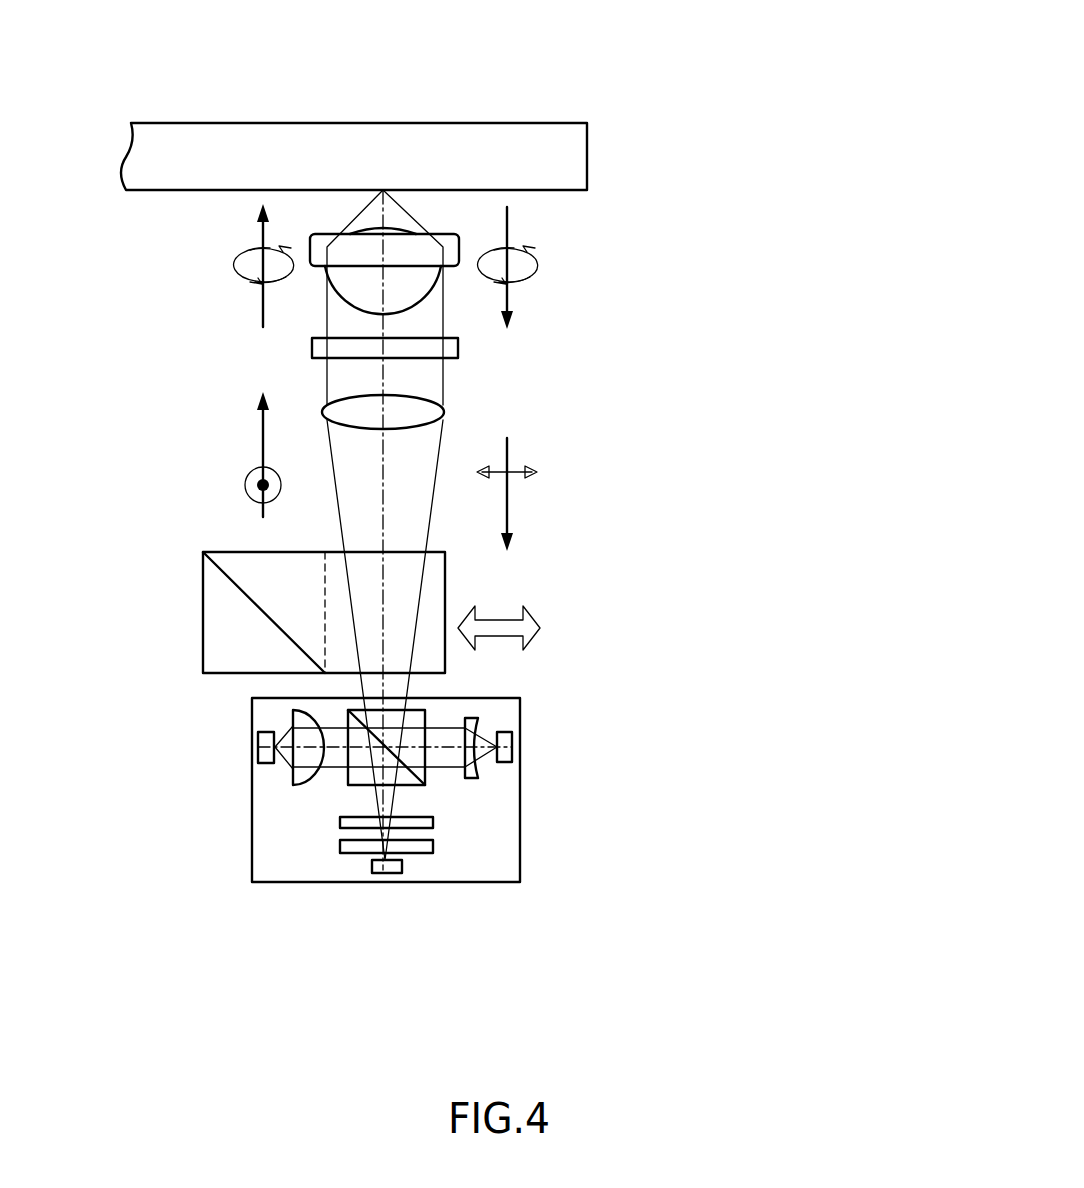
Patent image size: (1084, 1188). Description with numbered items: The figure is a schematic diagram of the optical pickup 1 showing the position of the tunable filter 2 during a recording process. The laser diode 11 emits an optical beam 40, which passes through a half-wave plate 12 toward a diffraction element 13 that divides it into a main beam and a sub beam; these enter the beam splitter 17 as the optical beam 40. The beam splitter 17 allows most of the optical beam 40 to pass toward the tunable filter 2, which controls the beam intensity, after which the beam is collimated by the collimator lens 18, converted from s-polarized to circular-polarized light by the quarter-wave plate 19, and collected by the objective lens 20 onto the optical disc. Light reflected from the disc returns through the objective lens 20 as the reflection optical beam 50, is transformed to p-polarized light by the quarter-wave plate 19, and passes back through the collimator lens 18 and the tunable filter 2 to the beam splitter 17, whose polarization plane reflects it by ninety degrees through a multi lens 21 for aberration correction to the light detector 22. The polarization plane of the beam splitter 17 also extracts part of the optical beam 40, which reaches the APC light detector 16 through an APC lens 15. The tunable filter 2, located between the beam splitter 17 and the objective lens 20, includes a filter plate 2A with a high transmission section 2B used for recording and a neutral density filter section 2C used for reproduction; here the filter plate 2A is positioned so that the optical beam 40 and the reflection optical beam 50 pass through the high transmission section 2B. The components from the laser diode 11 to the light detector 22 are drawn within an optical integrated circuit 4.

The optical pickup 1 is at (567, 73).
The tunable filter 2 is at (180, 635).
The filter plate 2A is at (226, 552).
The high transmission section 2B is at (446, 580).
The neutral density filter section 2C is at (203, 596).
The optical integrated circuit 4 is at (520, 882).
The laser diode 11 is at (387, 873).
The half-wave plate 12 is at (433, 846).
The diffraction element 13 is at (433, 822).
The APC lens 15 is at (293, 781).
The APC light detector 16 is at (258, 748).
The beam splitter 17 is at (425, 710).
The collimator lens 18 is at (445, 410).
The quarter-wave plate 19 is at (459, 349).
The objective lens 20 is at (453, 233).
The multi lens 21 is at (478, 722).
The light detector 22 is at (512, 748).
The optical beam 40 is at (261, 238).
The reflection optical beam 50 is at (508, 232).